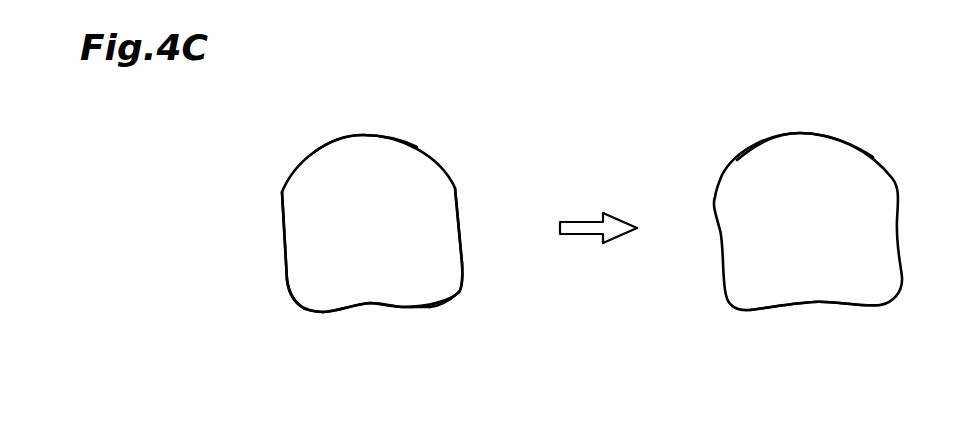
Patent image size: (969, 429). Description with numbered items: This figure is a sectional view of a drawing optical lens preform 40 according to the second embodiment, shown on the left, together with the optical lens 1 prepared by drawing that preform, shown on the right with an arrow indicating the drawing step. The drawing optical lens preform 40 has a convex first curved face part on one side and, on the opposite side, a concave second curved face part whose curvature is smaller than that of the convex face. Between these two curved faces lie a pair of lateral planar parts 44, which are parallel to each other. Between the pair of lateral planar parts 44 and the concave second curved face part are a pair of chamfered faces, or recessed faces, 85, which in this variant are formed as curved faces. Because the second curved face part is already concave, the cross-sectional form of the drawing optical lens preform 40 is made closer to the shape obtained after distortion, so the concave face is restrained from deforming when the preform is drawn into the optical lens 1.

The drawing optical lens preform 40 is at (448, 108).
The container 1 is at (885, 103).
The lateral planar parts 44 is at (281, 200).
The chamfered faces (recessed faces) 85 is at (298, 297).